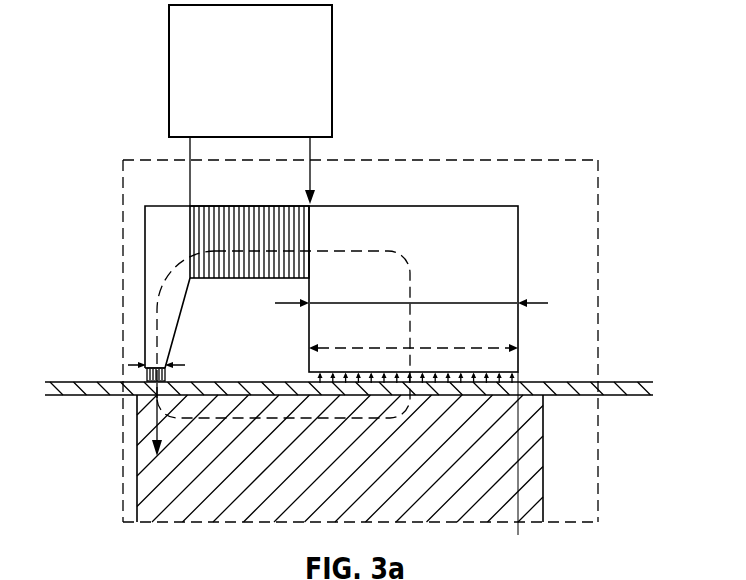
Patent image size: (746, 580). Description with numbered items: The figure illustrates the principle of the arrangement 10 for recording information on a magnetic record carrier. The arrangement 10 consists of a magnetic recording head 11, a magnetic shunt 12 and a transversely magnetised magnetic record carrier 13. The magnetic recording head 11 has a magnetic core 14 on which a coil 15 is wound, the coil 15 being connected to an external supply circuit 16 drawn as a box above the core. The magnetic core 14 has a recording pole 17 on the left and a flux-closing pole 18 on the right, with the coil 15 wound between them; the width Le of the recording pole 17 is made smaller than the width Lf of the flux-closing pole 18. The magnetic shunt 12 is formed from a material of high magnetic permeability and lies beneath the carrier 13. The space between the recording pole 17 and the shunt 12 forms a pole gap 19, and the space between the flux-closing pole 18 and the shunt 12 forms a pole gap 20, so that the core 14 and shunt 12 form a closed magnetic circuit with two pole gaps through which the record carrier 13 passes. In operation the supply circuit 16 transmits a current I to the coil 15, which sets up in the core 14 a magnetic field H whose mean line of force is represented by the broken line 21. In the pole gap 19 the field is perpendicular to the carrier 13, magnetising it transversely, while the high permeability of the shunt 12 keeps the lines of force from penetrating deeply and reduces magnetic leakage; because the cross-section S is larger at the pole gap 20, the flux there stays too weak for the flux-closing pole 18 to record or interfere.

The arrangement for recording information on a magnetic record carrier 10 is at (559, 160).
The magnetic recording head 11 is at (135, 250).
The magnetic shunt 12 is at (543, 465).
The magnetic record carrier 13 is at (598, 398).
The magnetic core 14 is at (172, 230).
The coil 15 is at (220, 225).
The supply circuit 16 is at (333, 50).
The recording pole 17 is at (155, 330).
The flux-closing pole 18 is at (521, 297).
The pole gap 19 is at (145, 377).
The pole gap 20 is at (515, 380).
The broken line 21 is at (388, 252).